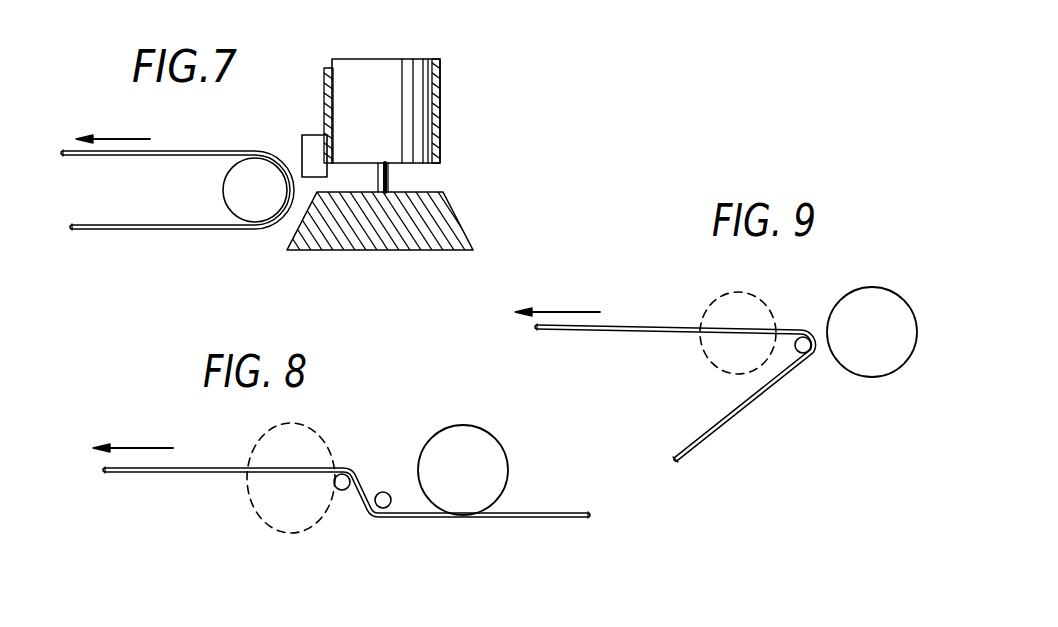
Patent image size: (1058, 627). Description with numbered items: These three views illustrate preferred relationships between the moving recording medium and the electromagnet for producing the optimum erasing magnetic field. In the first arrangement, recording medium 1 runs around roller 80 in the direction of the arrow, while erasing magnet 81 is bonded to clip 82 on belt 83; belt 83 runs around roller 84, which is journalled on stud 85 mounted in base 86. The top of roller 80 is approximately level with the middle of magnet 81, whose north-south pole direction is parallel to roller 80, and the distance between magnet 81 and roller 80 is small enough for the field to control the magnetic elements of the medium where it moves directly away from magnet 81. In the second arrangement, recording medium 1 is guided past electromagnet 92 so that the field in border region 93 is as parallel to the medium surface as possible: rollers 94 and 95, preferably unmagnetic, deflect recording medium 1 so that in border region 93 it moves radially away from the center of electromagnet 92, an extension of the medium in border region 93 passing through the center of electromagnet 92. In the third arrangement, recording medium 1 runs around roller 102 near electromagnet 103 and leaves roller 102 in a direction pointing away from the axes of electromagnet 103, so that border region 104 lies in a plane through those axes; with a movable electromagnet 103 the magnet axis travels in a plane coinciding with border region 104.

In FIG. 7, the recording medium 1 is at (198, 150).
In FIG. 8, the recording medium 1 is at (198, 462).
In FIG. 9, the recording medium 1 is at (652, 327).
In FIG. 7, the roller 80 is at (245, 205).
In FIG. 7, the erasing magnet 81 is at (302, 150).
In FIG. 7, the clip 82 is at (327, 95).
In FIG. 7, the belt 83 is at (331, 58).
In FIG. 7, the roller 84 is at (408, 68).
In FIG. 7, the stud 85 is at (392, 178).
In FIG. 7, the base 86 is at (467, 233).
In FIG. 8, the electromagnet 92 is at (478, 440).
In FIG. 8, the border region 93 is at (320, 432).
In FIG. 8, the roller 94 is at (337, 491).
In FIG. 8, the roller 95 is at (391, 507).
In FIG. 9, the roller 102 is at (806, 352).
In FIG. 9, the electromagnet 103 is at (882, 307).
In FIG. 9, the border region 104 is at (760, 296).